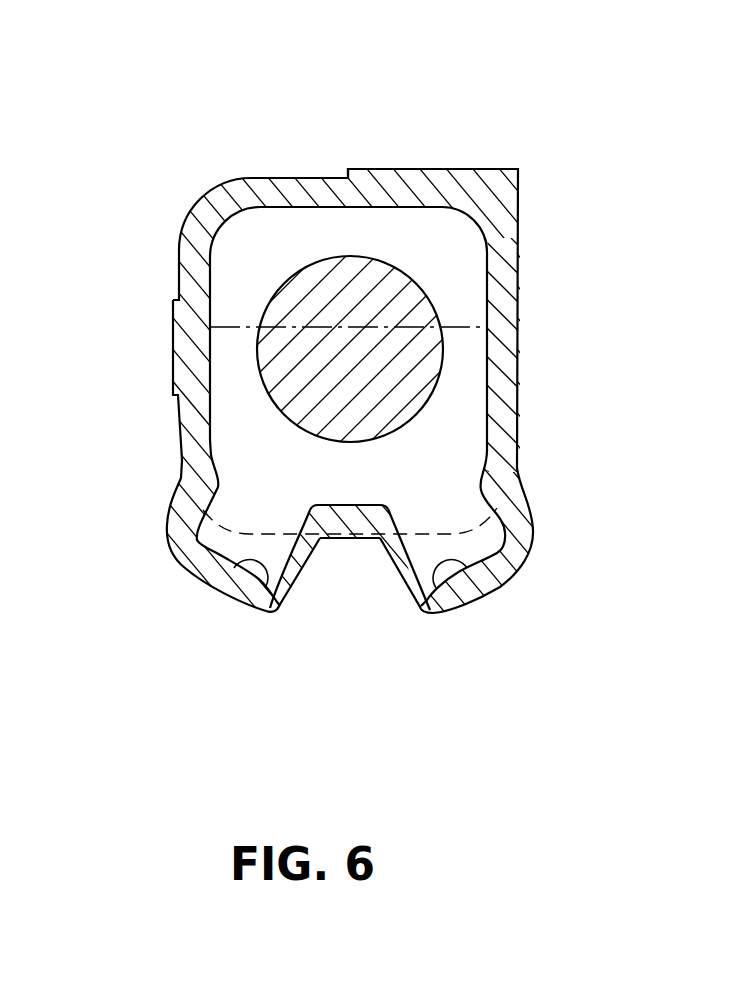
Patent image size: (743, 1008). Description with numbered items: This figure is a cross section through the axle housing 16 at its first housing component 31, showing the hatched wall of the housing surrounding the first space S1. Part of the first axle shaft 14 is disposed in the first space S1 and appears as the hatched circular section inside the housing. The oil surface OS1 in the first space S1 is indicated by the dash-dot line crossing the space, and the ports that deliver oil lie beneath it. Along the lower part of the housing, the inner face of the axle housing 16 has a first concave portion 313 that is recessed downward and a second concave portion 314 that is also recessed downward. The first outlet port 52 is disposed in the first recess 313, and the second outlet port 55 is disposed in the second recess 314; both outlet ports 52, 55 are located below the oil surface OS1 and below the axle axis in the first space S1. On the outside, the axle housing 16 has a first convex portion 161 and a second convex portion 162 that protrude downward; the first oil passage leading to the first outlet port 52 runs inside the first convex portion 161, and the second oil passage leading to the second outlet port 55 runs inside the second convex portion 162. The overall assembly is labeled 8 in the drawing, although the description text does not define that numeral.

The holder / clip assembly 8 is at (498, 122).
The axle housing 16 is at (405, 158).
The first housing component 31 is at (377, 172).
The first axle shaft 14 is at (308, 278).
The oil surface OS1 is at (467, 325).
The first space S1 is at (288, 468).
The second convex portion 162 is at (223, 522).
The first convex portion 161 is at (533, 517).
The second outlet port 55 is at (217, 542).
The first outlet port 52 is at (482, 543).
The second concave portion 314 is at (258, 604).
The first concave portion 313 is at (443, 603).